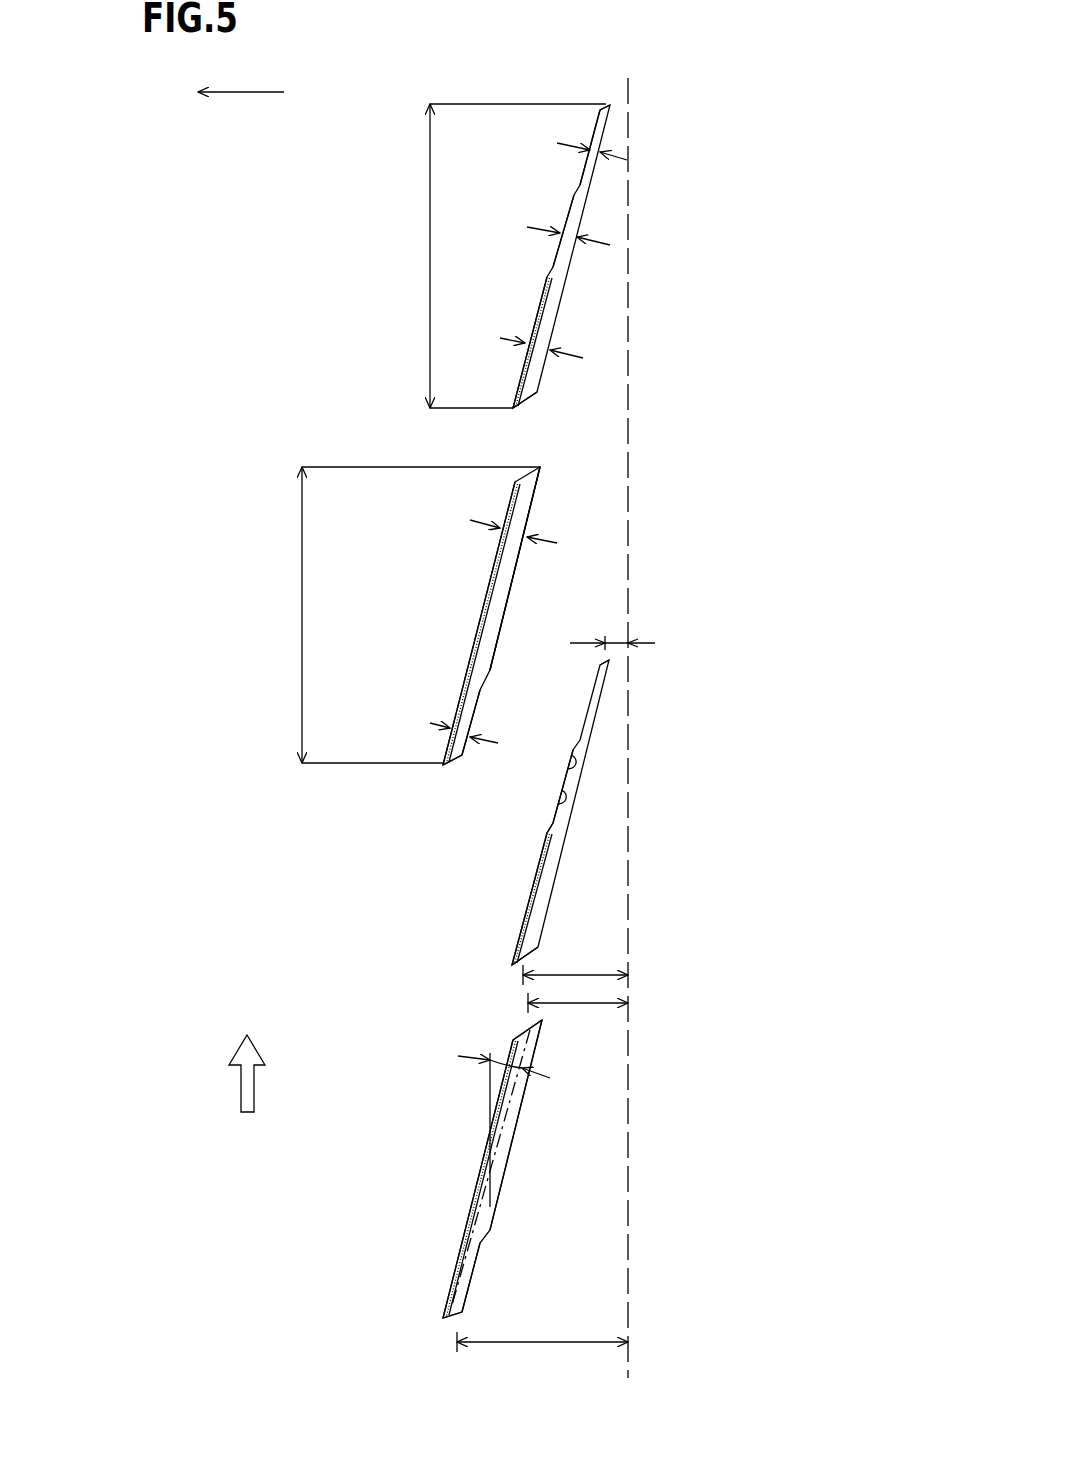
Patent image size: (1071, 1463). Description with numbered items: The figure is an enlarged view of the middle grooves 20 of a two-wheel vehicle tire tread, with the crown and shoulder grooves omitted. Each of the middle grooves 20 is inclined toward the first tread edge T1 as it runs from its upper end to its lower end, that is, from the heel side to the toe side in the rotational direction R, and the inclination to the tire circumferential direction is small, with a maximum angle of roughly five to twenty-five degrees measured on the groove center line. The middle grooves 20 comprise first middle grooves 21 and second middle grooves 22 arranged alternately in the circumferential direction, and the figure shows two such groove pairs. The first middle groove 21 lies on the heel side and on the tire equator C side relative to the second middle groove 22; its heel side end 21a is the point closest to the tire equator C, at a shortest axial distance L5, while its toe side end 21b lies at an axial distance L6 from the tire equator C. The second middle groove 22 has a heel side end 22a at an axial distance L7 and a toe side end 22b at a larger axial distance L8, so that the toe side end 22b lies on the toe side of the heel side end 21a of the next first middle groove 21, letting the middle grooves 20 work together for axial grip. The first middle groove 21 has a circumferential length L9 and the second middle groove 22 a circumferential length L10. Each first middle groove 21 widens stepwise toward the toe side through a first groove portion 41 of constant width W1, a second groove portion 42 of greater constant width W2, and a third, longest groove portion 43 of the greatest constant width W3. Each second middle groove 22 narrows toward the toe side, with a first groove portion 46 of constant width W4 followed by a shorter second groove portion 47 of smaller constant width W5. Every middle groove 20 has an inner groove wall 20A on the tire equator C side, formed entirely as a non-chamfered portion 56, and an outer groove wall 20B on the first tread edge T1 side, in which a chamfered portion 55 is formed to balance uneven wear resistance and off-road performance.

The middle grooves 20 is at (290, 855).
The first middle groove 21 is at (560, 258).
The second middle groove 22 is at (388, 547).
The heel side end of the first middle groove 21a is at (607, 104).
The toe side end of the first middle groove 21b is at (532, 400).
The heel side end of the second middle groove 22a is at (528, 1028).
The toe side end of the second middle groove 22b is at (443, 775).
The first groove portion 41 is at (605, 125).
The second groove portion 42 is at (578, 203).
The third groove portion 43 is at (553, 303).
The first groove portion 46 is at (502, 595).
The second groove portion 47 is at (460, 703).
The chamfered portion 55 is at (535, 885).
The non-chamfered portion 56 is at (578, 768).
The inner groove wall 20A is at (513, 568).
The outer groove wall 20B is at (493, 620).
The tire equator C is at (627, 713).
The first tread edge T1 is at (223, 93).
The rotational direction R is at (247, 1059).
The groove width of the first groove portion W1 is at (598, 145).
The groove width of the second groove portion W2 is at (577, 237).
The groove width of the third groove portion W3 is at (550, 350).
The groove width of the first groove portion W4 is at (540, 522).
The groove width of the second groove portion W5 is at (475, 732).
The shortest distance L5 is at (612, 648).
The distance L6 is at (578, 975).
The distance L7 is at (580, 1003).
The distance L8 is at (542, 1355).
The length of the first middle groove L9 is at (497, 256).
The length of the second middle groove L10 is at (393, 615).